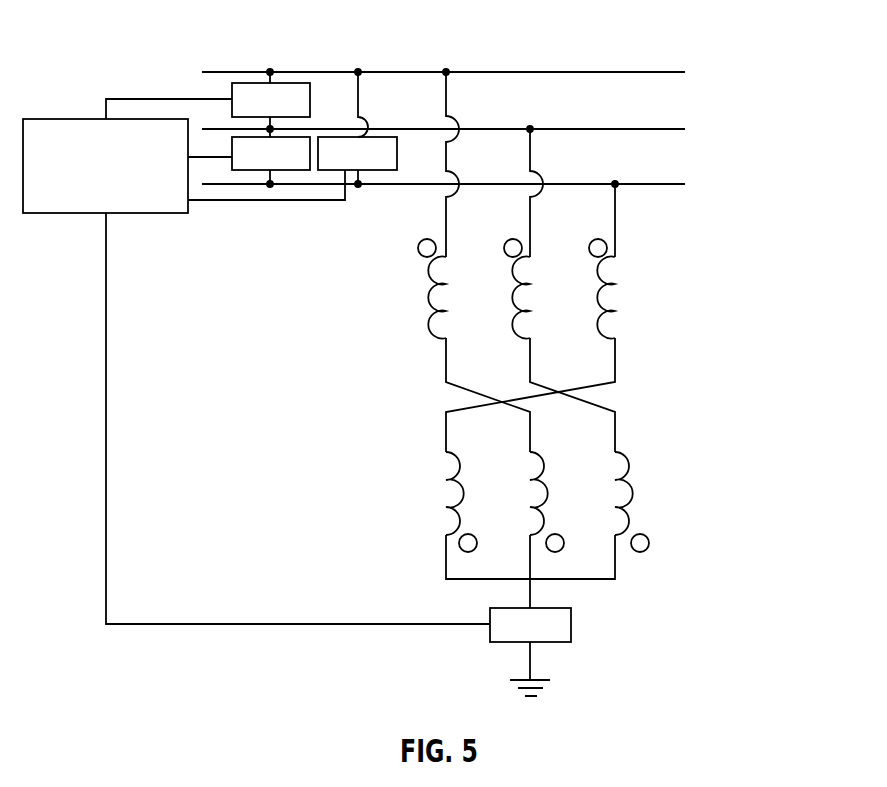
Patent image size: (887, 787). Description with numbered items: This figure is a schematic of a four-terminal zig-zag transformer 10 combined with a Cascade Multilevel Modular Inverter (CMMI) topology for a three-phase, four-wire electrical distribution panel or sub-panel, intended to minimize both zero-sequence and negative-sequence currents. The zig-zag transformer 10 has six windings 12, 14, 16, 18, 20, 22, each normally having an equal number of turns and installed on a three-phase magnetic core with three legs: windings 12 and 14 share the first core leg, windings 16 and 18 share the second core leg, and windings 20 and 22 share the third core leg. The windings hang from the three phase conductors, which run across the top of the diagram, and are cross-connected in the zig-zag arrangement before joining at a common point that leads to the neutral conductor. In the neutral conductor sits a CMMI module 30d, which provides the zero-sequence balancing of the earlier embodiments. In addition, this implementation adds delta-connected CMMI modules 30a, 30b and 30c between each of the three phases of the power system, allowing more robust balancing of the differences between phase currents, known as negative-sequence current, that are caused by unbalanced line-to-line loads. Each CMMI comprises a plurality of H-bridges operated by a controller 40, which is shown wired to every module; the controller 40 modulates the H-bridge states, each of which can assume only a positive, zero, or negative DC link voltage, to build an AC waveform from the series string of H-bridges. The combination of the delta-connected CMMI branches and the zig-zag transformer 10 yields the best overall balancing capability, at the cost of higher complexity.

The zig-zag transformer 10 is at (688, 312).
The winding 12 is at (430, 298).
The winding 14 is at (632, 497).
The winding 16 is at (516, 297).
The winding 18 is at (452, 478).
The winding 20 is at (617, 283).
The winding 22 is at (542, 500).
The CMMI module 30a is at (252, 84).
The CMMI module 30b is at (255, 170).
The CMMI module 30c is at (387, 170).
The CMMI module 30d is at (490, 632).
The controller 40 is at (72, 213).